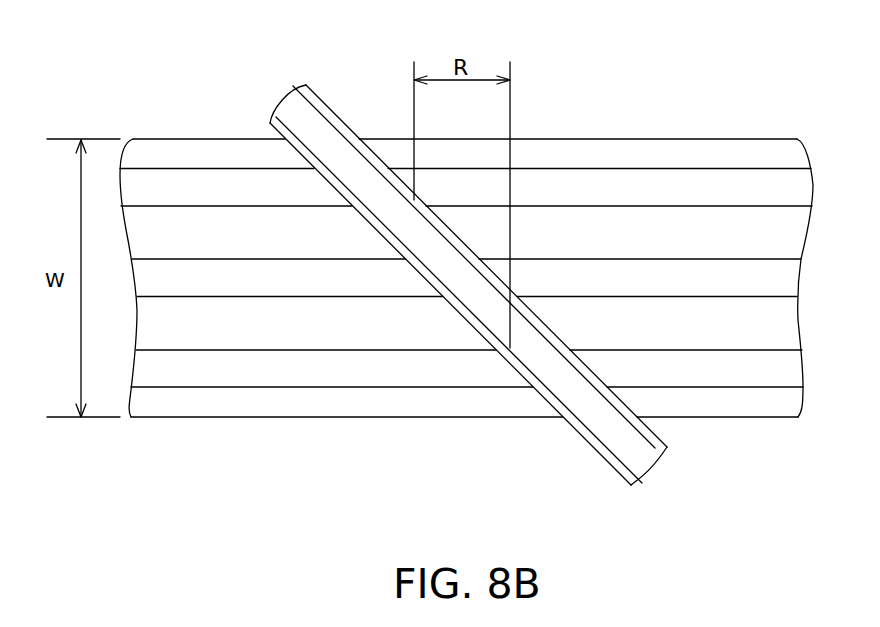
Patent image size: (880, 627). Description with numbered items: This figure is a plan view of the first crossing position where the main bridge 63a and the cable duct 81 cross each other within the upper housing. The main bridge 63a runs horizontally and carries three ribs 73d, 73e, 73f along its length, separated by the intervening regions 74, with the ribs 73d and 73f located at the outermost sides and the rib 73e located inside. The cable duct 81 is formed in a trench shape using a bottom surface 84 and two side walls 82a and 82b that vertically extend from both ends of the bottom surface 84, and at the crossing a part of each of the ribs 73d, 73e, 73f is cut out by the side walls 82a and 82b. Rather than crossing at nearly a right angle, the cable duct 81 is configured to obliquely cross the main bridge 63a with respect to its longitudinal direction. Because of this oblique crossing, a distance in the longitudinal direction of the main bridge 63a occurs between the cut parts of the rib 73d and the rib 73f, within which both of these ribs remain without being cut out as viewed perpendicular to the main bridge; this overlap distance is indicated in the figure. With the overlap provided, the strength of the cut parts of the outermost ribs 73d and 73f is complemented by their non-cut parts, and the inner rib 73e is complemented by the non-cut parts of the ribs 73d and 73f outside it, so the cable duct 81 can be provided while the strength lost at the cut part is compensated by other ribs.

The main bridge 63a is at (598, 121).
The rib 73d is at (220, 198).
The rib 73e is at (220, 291).
The rib 73f is at (220, 377).
The insulating layer strip 74 is at (270, 164).
The cable duct 81 is at (254, 121).
The side wall 82a is at (618, 473).
The side wall 82b is at (658, 436).
The bottom surface 84 is at (641, 455).